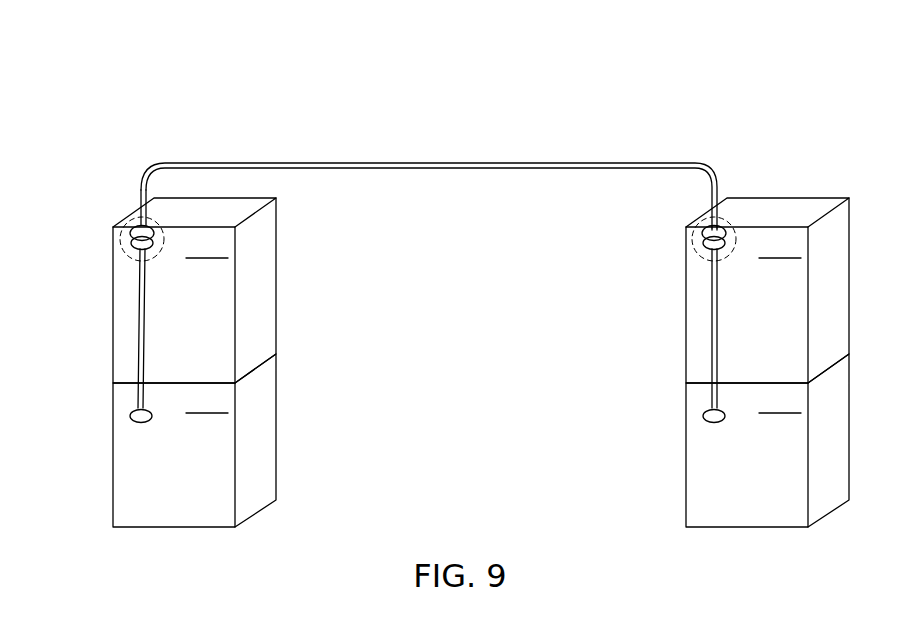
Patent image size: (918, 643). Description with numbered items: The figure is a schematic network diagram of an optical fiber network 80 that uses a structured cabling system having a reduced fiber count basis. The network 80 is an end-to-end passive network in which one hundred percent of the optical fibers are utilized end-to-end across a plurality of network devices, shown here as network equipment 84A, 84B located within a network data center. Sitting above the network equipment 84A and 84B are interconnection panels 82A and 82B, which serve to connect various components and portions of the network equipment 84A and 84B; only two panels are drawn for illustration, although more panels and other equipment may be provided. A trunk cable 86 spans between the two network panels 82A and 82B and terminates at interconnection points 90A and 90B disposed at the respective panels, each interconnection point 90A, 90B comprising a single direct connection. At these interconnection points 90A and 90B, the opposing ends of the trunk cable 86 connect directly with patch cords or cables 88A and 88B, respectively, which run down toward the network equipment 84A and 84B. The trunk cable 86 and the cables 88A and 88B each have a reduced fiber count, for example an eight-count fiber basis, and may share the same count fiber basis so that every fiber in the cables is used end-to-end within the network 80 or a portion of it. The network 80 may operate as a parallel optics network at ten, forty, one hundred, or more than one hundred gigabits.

The optical fiber network 80 is at (208, 77).
The interconnection panel 82A is at (194, 290).
The interconnection panel 82B is at (767, 290).
The network equipment 84A is at (194, 440).
The network equipment 84B is at (767, 440).
The trunk cable 86 is at (418, 162).
The patch cord or cable 88A is at (139, 346).
The patch cord or cable 88B is at (711, 352).
The interconnection point 90A is at (121, 250).
The interconnection point 90B is at (694, 250).